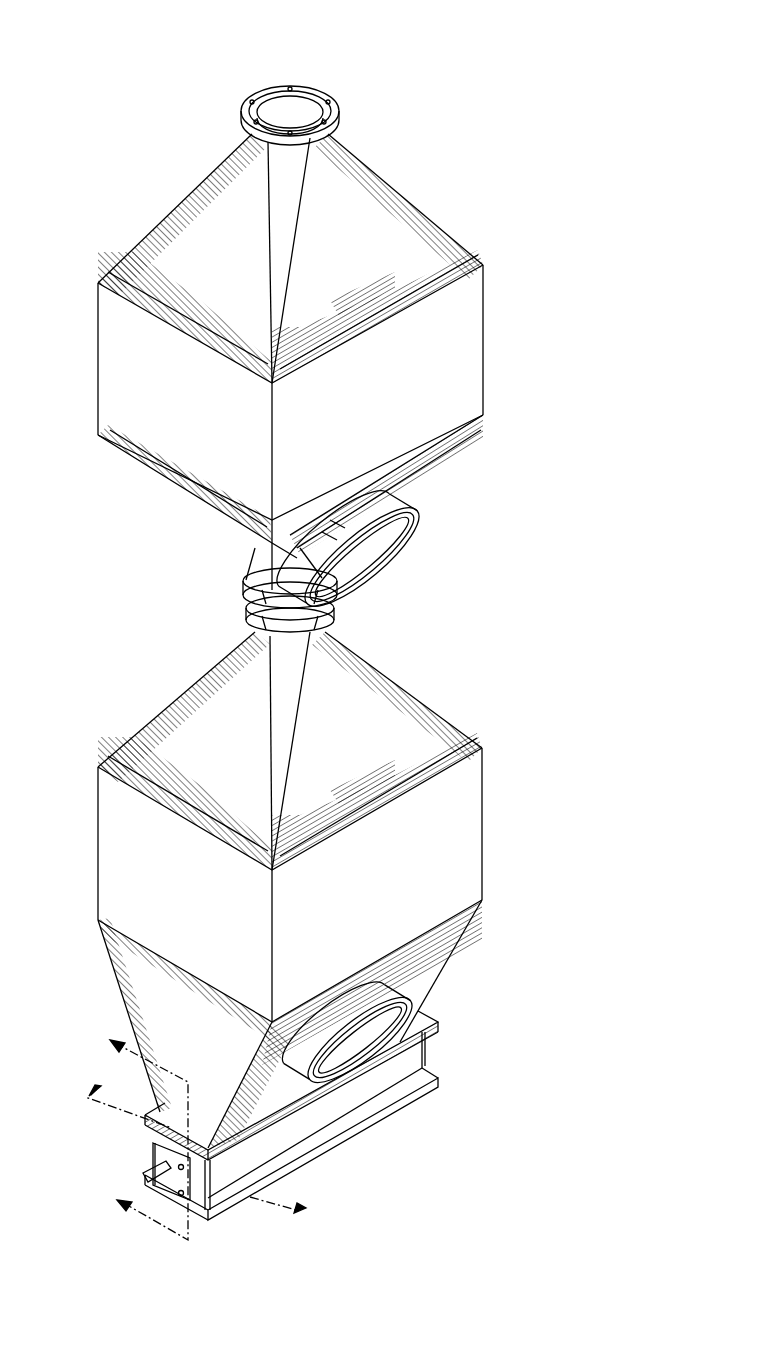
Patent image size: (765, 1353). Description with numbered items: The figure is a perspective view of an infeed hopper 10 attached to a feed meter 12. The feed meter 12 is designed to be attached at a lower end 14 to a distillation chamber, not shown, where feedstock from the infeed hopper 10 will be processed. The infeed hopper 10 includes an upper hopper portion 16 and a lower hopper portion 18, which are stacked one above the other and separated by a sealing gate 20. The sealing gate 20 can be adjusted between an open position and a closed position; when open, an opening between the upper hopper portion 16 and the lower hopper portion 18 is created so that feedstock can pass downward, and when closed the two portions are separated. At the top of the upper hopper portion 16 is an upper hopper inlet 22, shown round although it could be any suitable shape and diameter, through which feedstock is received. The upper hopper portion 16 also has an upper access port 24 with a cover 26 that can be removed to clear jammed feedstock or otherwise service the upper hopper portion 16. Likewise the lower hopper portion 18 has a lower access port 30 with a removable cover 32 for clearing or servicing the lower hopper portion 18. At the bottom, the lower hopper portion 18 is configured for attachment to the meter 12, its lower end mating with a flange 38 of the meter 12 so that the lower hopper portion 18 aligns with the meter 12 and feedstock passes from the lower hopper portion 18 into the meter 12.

The infeed hopper 10 is at (530, 78).
The feed meter 12 is at (418, 1136).
The lower end 14 is at (330, 1158).
The upper hopper portion 16 is at (150, 178).
The lower hopper portion 18 is at (150, 676).
The sealing gate 20 is at (250, 576).
The upper hopper inlet 22 is at (292, 124).
The upper access port 24 is at (418, 532).
The cover 26 is at (372, 553).
The lower access port 30 is at (428, 1028).
The cover 32 is at (392, 1050).
The flange 38 is at (160, 1117).